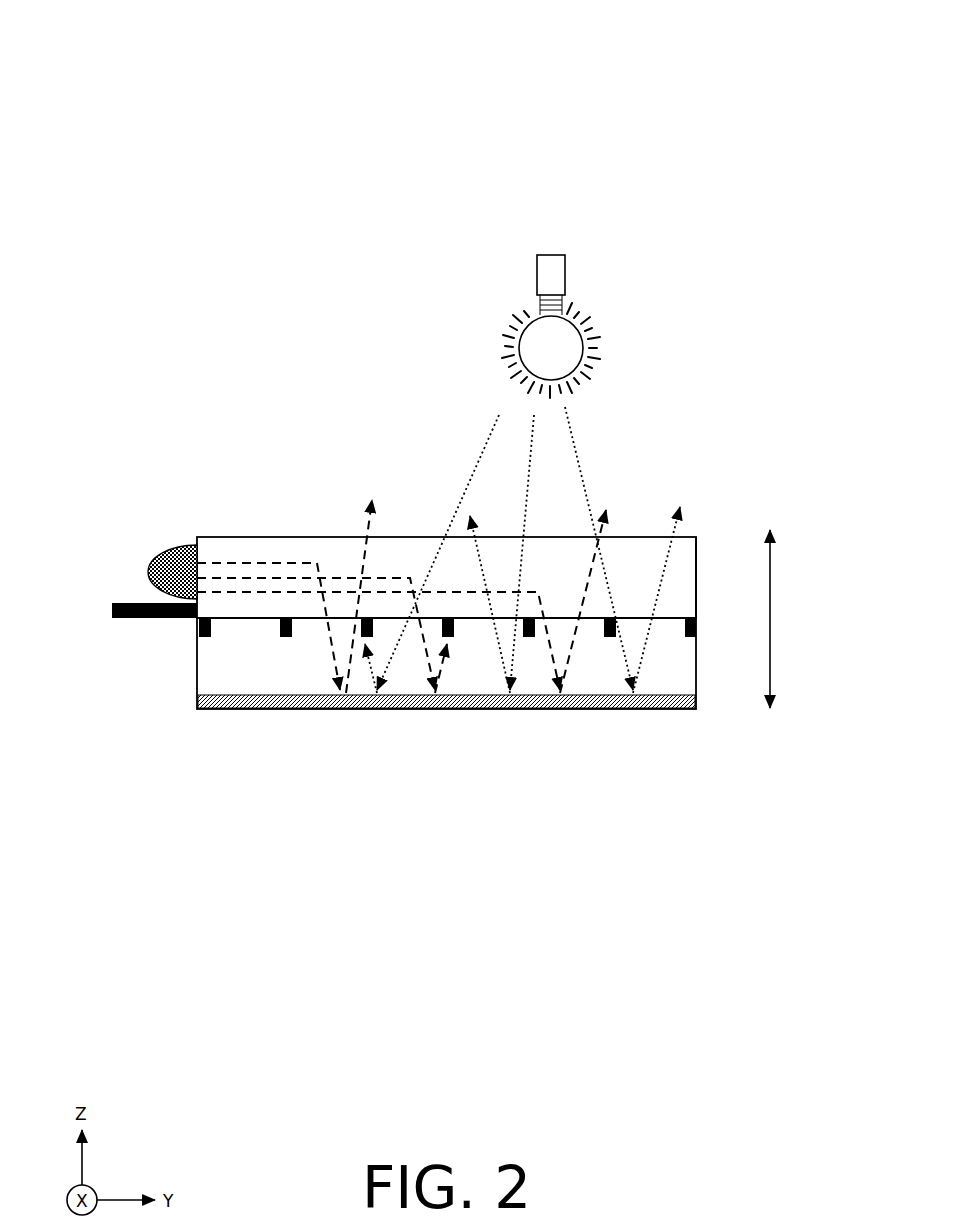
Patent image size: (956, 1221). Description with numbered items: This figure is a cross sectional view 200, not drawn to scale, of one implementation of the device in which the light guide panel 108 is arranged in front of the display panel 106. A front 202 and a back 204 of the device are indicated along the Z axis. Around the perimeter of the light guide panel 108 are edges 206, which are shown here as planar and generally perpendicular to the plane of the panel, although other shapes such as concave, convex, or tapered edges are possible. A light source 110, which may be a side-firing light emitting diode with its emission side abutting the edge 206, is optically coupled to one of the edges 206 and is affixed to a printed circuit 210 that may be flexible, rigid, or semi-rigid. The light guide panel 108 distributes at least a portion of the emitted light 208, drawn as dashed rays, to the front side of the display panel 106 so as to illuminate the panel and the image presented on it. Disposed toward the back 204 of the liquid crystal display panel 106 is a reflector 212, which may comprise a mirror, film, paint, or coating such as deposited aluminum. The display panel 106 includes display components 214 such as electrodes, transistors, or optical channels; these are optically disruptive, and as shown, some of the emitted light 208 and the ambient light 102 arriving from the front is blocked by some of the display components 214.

The cross sectional view 200 is at (719, 62).
The ambient light 102 is at (573, 440).
The light guide panel 108 is at (217, 547).
The edge 206 is at (700, 552).
The light source 110 is at (186, 545).
The emitted light 208 is at (252, 563).
The front 202 is at (766, 548).
The back 204 is at (767, 686).
The display panel 106 is at (477, 673).
The display components 214 is at (285, 637).
The reflector 212 is at (288, 708).
The printed circuit 210 is at (125, 618).